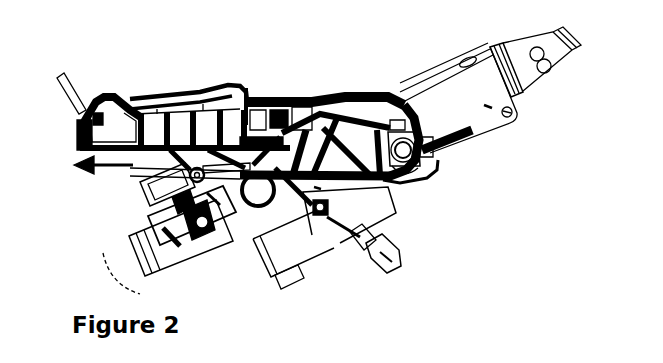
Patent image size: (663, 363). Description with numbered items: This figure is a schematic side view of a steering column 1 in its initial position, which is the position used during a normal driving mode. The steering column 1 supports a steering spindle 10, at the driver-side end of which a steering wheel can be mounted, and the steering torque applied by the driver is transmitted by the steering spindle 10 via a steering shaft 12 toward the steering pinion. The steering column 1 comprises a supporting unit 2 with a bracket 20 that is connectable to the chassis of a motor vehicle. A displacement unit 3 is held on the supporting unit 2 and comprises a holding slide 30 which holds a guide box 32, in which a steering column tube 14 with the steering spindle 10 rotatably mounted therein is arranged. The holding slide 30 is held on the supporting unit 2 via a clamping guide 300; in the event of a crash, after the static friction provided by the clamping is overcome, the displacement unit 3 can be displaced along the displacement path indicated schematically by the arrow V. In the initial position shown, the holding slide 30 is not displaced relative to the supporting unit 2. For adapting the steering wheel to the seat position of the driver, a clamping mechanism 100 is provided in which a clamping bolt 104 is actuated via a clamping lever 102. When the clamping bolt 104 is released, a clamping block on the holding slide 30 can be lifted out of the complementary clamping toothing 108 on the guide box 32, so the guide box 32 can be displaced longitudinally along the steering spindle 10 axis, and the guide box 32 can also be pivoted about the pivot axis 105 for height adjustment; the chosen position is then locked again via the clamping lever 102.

The steering column 1 is at (420, 45).
The supporting unit 2 is at (146, 79).
The displacement unit 3 is at (325, 81).
The clamping guide 300 is at (352, 93).
The holding slide 30 is at (373, 88).
The bracket 20 is at (102, 90).
The steering spindle 10 is at (525, 58).
The steering column tube 14 is at (520, 90).
The guide box 32 is at (490, 123).
The clamping toothing 108 is at (467, 140).
The clamping bolt 104 is at (437, 173).
The clamping mechanism 100 is at (430, 213).
The clamping lever 102 is at (383, 270).
The steering shaft 12 is at (180, 275).
The pivot axis 105 is at (193, 174).
The arrow V is at (112, 168).